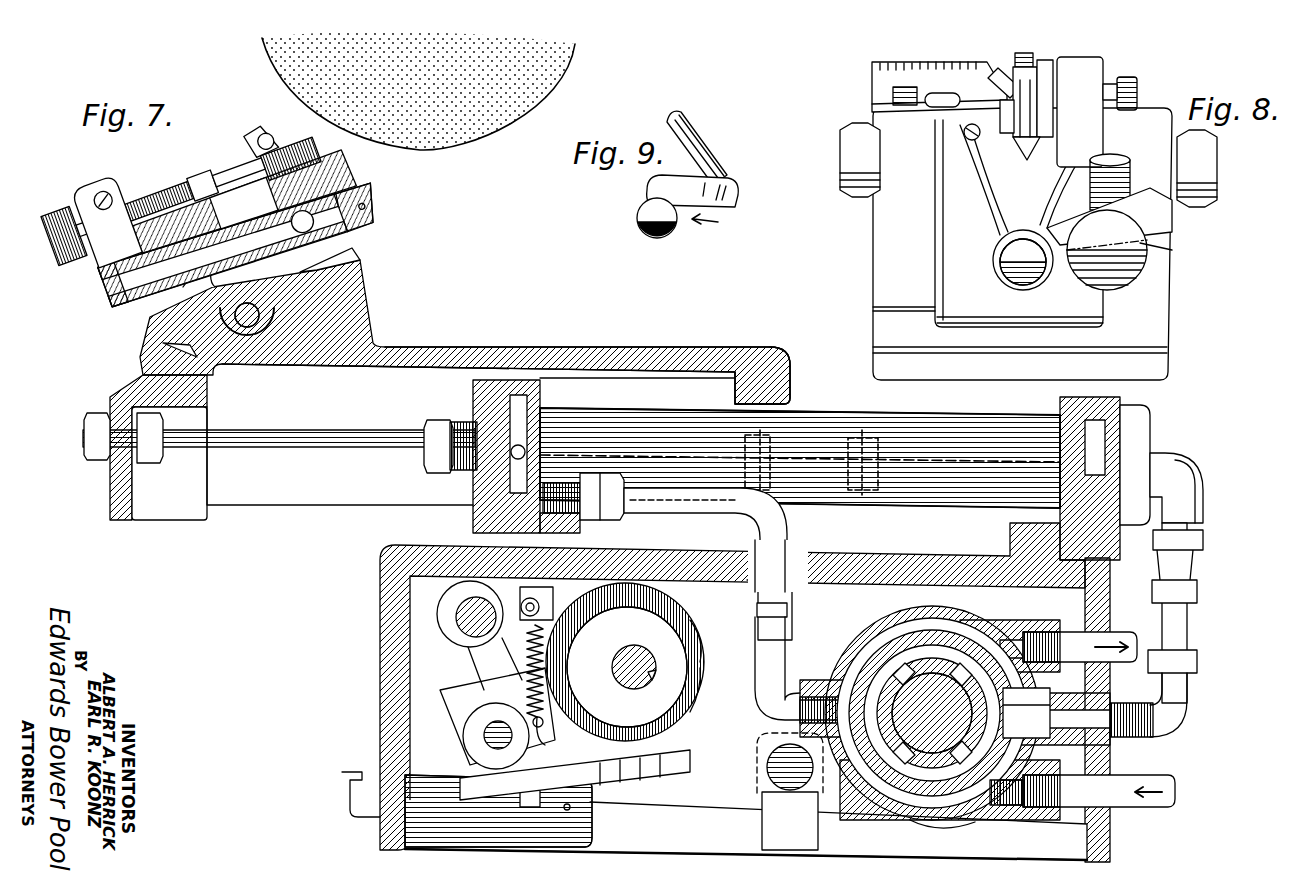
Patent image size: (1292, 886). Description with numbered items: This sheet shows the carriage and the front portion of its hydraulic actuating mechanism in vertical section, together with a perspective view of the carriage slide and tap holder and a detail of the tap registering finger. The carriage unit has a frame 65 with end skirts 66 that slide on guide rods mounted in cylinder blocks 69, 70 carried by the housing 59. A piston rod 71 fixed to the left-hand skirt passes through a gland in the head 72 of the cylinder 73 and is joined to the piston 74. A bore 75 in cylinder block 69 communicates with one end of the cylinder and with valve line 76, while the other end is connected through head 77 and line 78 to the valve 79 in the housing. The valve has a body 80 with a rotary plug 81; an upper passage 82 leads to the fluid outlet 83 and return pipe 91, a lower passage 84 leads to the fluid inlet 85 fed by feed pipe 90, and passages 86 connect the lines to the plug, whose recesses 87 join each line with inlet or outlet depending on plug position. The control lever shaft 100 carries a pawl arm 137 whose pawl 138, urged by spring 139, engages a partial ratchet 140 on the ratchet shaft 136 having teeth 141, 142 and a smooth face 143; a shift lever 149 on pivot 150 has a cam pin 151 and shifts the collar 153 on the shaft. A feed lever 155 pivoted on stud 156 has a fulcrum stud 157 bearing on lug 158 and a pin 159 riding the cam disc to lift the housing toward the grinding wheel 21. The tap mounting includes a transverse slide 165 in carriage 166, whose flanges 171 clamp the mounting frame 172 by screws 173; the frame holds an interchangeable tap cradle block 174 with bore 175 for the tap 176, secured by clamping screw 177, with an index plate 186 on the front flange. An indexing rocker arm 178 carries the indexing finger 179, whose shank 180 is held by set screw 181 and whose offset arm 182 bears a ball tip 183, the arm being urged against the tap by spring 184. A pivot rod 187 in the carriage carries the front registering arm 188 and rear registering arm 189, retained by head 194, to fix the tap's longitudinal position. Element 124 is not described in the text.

In FIG. 7, the grinding wheel 21 is at (300, 84).
In FIG. 7, the housing 59 is at (392, 562).
In FIG. 7, the frame 65 is at (640, 348).
In FIG. 7, the end skirts 66 is at (112, 496).
In FIG. 7, the cylinder block 69 is at (472, 515).
In FIG. 7, the cylinder block 70 is at (1130, 410).
In FIG. 7, the piston rod 71 is at (270, 448).
In FIG. 7, the head 72 is at (462, 406).
In FIG. 7, the cylinder 73 is at (938, 437).
In FIG. 7, the piston 74 is at (815, 442).
In FIG. 7, the bore 75 is at (530, 418).
In FIG. 7, the valve line 76 is at (790, 543).
In FIG. 7, the head 77 is at (1140, 455).
In FIG. 7, the line 78 is at (1185, 602).
In FIG. 7, the valve 79 is at (856, 640).
In FIG. 7, the body 80 is at (960, 622).
In FIG. 7, the rotary plug 81 is at (900, 640).
In FIG. 7, the passage 82 is at (950, 622).
In FIG. 7, the fluid outlet 83 is at (1022, 640).
In FIG. 7, the lower passage 84 is at (880, 797).
In FIG. 7, the fluid inlet 85 is at (1020, 815).
In FIG. 7, the passages 86 is at (850, 680).
In FIG. 7, the recesses 87 is at (966, 703).
In FIG. 7, the feed pipe 90 is at (1135, 805).
In FIG. 7, the return pipe 91 is at (1112, 655).
In FIG. 7, the control lever shaft 100 is at (465, 612).
In FIG. 7, the clamp 124 is at (248, 215).
In FIG. 7, the ratchet shaft 136 is at (642, 650).
In FIG. 7, the pawl arm 137 is at (462, 660).
In FIG. 7, the pawl 138 is at (690, 760).
In FIG. 7, the spring 139 is at (580, 632).
In FIG. 7, the partial ratchet 140 is at (692, 626).
In FIG. 7, the tooth 141 is at (704, 706).
In FIG. 7, the tooth 142 is at (706, 672).
In FIG. 7, the face 143 is at (630, 592).
In FIG. 7, the shift lever 149 is at (553, 600).
In FIG. 7, the pivot 150 is at (590, 812).
In FIG. 7, the cam pin 151 is at (548, 660).
In FIG. 7, the collar 153 is at (458, 605).
In FIG. 7, the feed lever 155 is at (703, 800).
In FIG. 7, the stud 156 is at (975, 825).
In FIG. 7, the fulcrum stud 157 is at (778, 773).
In FIG. 7, the lug 158 is at (810, 836).
In FIG. 7, the pin 159 is at (640, 790).
In FIG. 7, the transverse slide 165 is at (345, 300).
In FIG. 7, the carriage 166 is at (345, 252).
In FIG. 8, the carriage 166 is at (1160, 268).
In FIG. 8, the flanges 171 is at (1142, 118).
In FIG. 7, the mounting frame 172 is at (244, 203).
In FIG. 8, the mounting frame 172 is at (1085, 136).
In FIG. 8, the screws 173 is at (1205, 166).
In FIG. 8, the tap cradle block 174 is at (1055, 96).
In FIG. 8, the bore 175 is at (1042, 108).
In FIG. 7, the tap 176 is at (238, 178).
In FIG. 8, the tap 176 is at (1022, 120).
In FIG. 8, the clamping screw 177 is at (1130, 82).
In FIG. 8, the indexing rocker arm 178 is at (963, 98).
In FIG. 7, the indexing finger 179 is at (262, 143).
In FIG. 8, the indexing finger 179 is at (990, 100).
In FIG. 9, the indexing finger 179 is at (723, 223).
In FIG. 9, the shank 180 is at (695, 135).
In FIG. 8, the set screw 181 is at (975, 64).
In FIG. 9, the offset arm 182 is at (648, 180).
In FIG. 9, the ball tip 183 is at (650, 215).
In FIG. 8, the spring 184 is at (893, 97).
In FIG. 8, the index plate 186 is at (1160, 228).
In FIG. 7, the pivot rod 187 is at (372, 200).
In FIG. 7, the front registering arm 188 is at (335, 176).
In FIG. 7, the rear registering arm 189 is at (132, 303).
In FIG. 8, the head 194 is at (1012, 282).